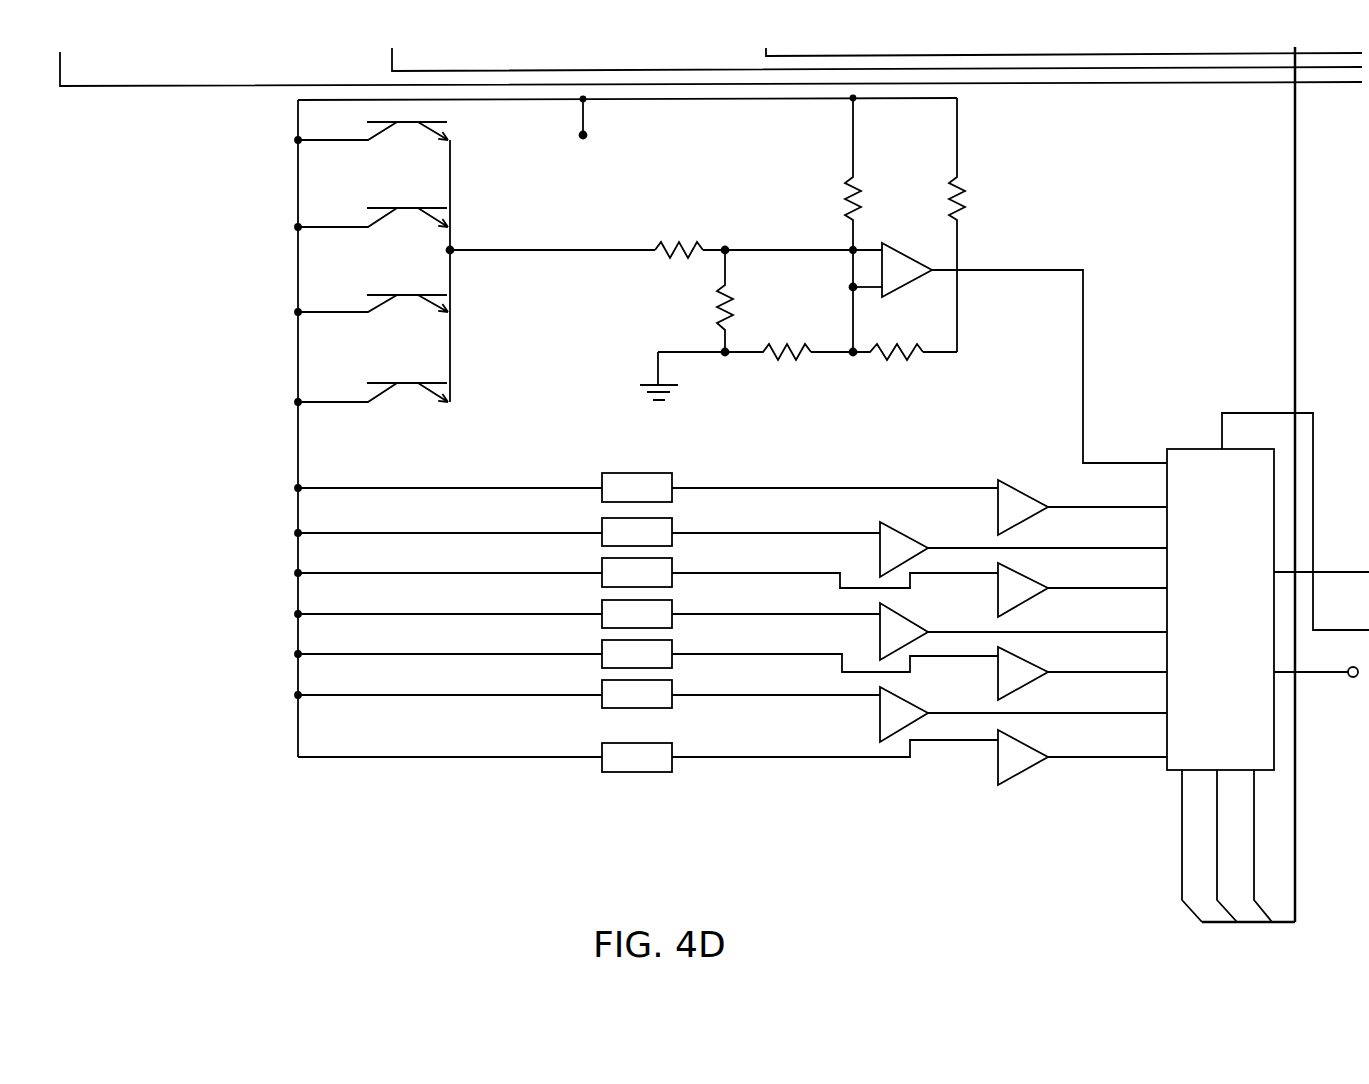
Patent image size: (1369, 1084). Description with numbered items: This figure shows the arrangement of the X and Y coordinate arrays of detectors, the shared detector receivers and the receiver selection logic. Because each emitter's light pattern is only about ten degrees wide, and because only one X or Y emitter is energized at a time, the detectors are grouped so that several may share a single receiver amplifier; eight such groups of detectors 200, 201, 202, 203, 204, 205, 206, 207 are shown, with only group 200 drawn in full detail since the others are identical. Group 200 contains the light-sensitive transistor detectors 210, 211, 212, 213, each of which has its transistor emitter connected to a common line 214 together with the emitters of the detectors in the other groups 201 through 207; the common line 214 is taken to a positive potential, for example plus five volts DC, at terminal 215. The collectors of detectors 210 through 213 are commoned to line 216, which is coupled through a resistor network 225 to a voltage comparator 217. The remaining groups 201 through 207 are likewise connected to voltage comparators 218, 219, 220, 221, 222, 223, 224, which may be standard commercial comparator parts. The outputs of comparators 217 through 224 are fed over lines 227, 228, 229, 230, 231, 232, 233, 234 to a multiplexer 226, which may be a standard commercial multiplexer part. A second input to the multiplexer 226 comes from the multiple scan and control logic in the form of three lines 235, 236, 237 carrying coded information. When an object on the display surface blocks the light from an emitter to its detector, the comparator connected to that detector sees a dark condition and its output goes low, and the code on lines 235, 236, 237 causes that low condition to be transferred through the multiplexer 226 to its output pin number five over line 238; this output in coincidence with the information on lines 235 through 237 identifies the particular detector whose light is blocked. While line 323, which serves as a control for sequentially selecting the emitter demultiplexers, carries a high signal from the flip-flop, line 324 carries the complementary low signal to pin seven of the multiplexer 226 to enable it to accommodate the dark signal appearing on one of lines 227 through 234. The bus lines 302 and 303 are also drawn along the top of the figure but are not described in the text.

The group of detectors 200 is at (626, 251).
The group of detectors 201 is at (650, 473).
The group of detectors 202 is at (602, 520).
The group of detectors 203 is at (604, 560).
The group of detectors 204 is at (604, 602).
The group of detectors 205 is at (604, 642).
The group of detectors 206 is at (604, 683).
The group of detectors 207 is at (602, 747).
The transistor detector 210 is at (425, 113).
The transistor detector 211 is at (392, 203).
The transistor detector 212 is at (397, 290).
The transistor detector 213 is at (399, 377).
The common line 214 is at (298, 122).
The terminal 215 is at (583, 135).
The line 216 is at (528, 251).
The voltage comparator 217 is at (898, 257).
The voltage comparator 218 is at (1013, 488).
The voltage comparator 219 is at (900, 534).
The voltage comparator 220 is at (998, 595).
The voltage comparator 221 is at (880, 630).
The voltage comparator 222 is at (998, 680).
The voltage comparator 223 is at (880, 722).
The voltage comparator 224 is at (1000, 782).
The resistor network 225 is at (746, 233).
The multiplexer 226 is at (1180, 452).
The line 227 is at (1125, 757).
The line 228 is at (1063, 713).
The line 229 is at (1125, 672).
The line 230 is at (1065, 632).
The line 231 is at (1125, 588).
The line 232 is at (1060, 547).
The line 233 is at (1125, 507).
The line 234 is at (1117, 463).
The line 235 is at (1254, 815).
The line 236 is at (1217, 846).
The line 237 is at (1182, 883).
The line 238 is at (1335, 572).
The bus line 302 is at (98, 87).
The bus line 303 is at (1083, 57).
The line 323 is at (742, 72).
The line 324 is at (1247, 413).